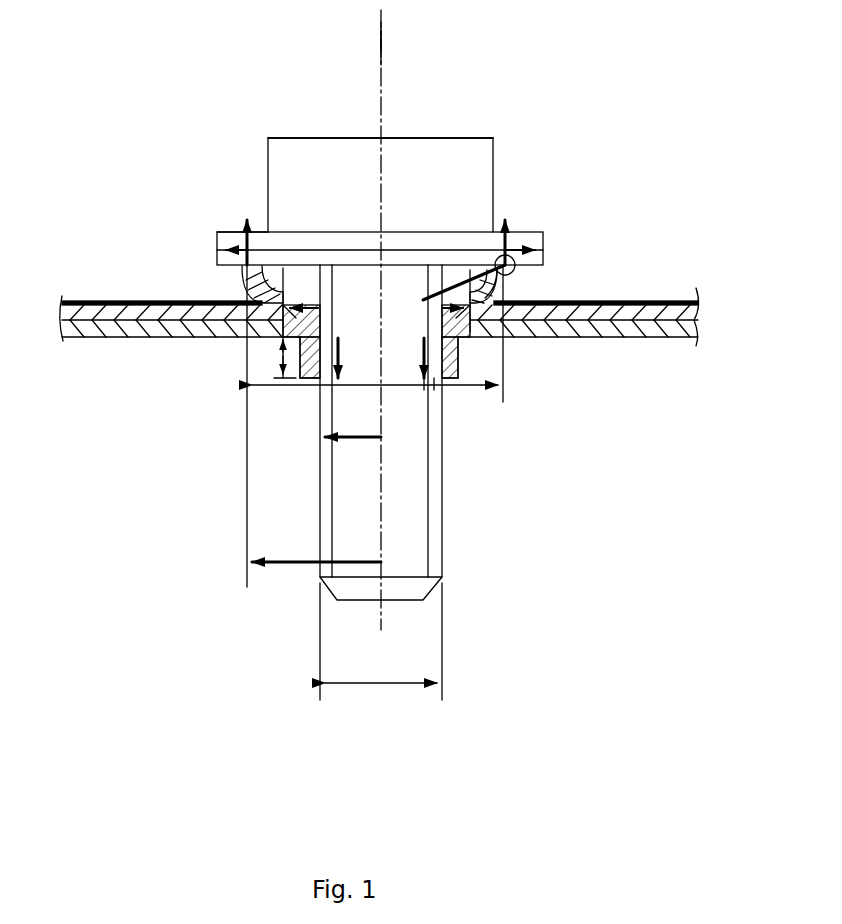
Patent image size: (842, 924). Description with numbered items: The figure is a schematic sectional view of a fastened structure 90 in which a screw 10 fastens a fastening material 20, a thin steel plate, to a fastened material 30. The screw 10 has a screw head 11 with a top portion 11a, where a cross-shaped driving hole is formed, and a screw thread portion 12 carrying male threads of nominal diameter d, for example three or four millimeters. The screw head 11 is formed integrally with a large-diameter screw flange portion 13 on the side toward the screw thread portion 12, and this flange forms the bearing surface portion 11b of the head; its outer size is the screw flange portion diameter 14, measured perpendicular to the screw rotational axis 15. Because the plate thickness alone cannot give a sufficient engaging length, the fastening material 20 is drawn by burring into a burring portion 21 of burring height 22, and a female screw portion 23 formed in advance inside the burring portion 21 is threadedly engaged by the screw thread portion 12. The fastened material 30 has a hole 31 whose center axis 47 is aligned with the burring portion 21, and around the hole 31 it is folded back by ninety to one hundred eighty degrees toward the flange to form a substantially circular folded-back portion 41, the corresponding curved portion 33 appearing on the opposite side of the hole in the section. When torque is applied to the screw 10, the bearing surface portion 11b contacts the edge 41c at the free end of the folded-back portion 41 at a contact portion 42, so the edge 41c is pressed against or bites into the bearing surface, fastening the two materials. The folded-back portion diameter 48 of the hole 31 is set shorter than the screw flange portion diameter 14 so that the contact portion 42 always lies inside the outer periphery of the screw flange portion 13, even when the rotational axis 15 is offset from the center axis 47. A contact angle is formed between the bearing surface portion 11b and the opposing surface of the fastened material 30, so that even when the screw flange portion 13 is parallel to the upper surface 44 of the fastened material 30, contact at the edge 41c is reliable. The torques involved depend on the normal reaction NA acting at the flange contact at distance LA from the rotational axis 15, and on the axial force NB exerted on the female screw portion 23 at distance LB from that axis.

The screw 10 is at (462, 563).
The screw head 11 is at (470, 170).
The top portion 11a is at (345, 138).
The bearing surface portion 11b is at (515, 262).
The screw thread portion 12 is at (325, 488).
The screw flange portion 13 is at (520, 233).
The screw flange portion diameter 14 is at (282, 248).
The screw rotational axis 15 is at (381, 58).
The fastening material 20 is at (660, 340).
The burring portion 21 is at (444, 378).
The burring height 22 is at (282, 350).
The female screw portion 23 is at (434, 382).
The fastened material 30 is at (698, 306).
The hole 31 is at (362, 300).
The collar 33 is at (245, 288).
The folded-back portion 41 is at (492, 292).
The edge 41c is at (500, 280).
The contact portion 42 is at (512, 270).
The upper surface 44 is at (662, 300).
The center axis 47 is at (381, 40).
The folded-back portion diameter 48 is at (320, 387).
The fastened structure 90 is at (474, 104).
The distance LA is at (298, 565).
The distance LB is at (320, 437).
The normal reaction NA is at (245, 222).
The axial force NB is at (445, 358).
The nominal diameter d is at (381, 667).